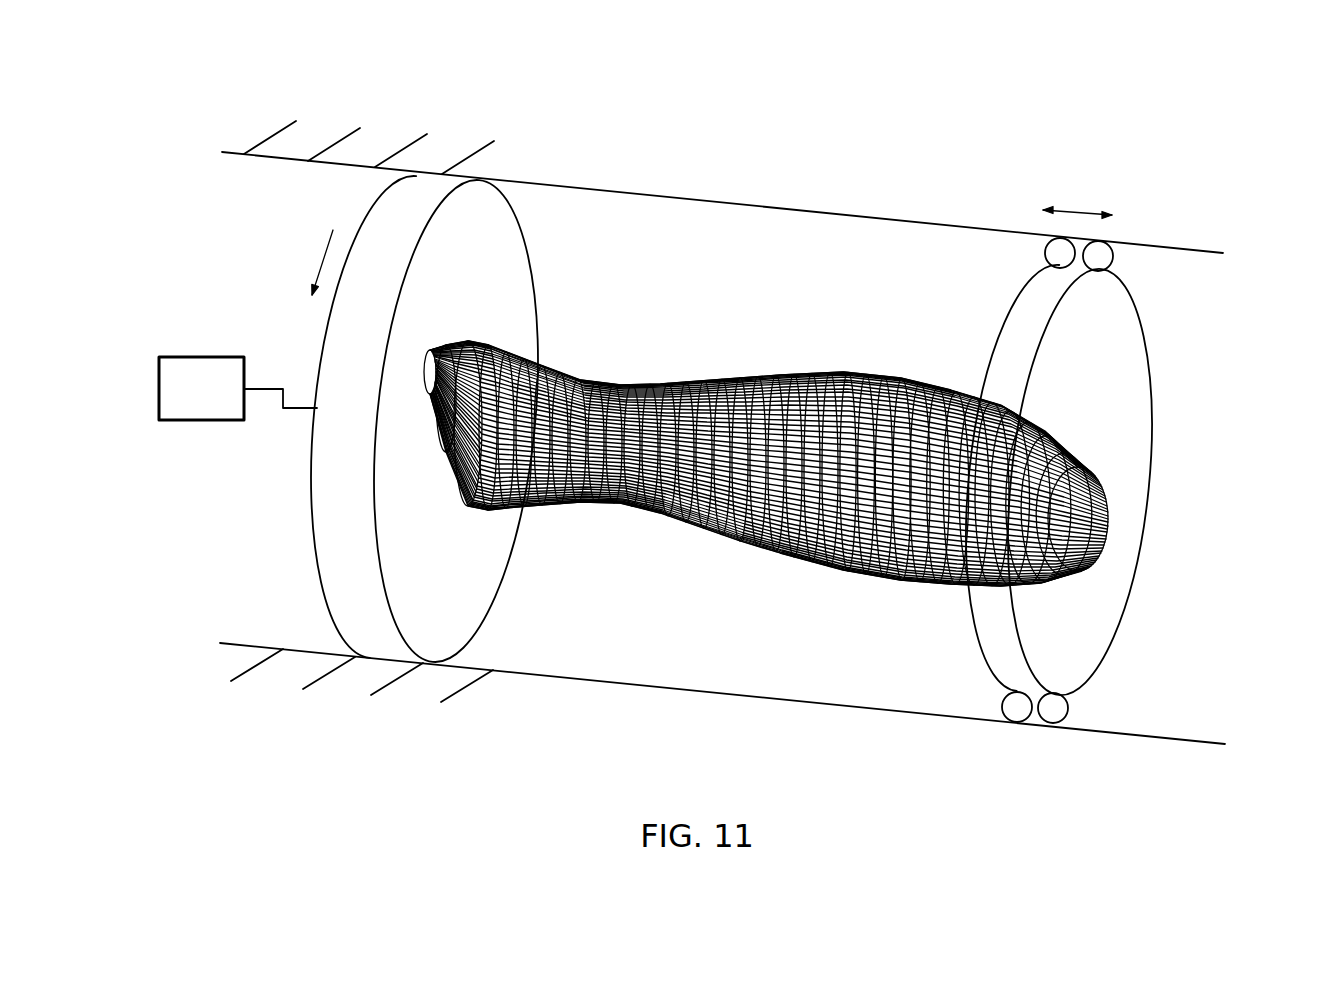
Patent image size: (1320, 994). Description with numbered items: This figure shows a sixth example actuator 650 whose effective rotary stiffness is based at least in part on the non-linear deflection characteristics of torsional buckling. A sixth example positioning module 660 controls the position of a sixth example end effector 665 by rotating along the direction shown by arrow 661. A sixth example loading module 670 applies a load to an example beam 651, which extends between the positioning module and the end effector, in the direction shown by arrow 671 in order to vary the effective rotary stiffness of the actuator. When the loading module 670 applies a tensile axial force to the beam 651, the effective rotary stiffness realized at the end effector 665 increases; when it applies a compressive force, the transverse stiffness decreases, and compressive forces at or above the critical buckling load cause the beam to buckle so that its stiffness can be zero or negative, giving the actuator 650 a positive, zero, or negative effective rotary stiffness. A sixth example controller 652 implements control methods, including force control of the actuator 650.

The sixth example actuator 650 is at (722, 405).
The example beam 651 is at (743, 393).
The sixth example controller 652 is at (178, 402).
The sixth example positioning module 660 is at (326, 541).
The arrow (rotation direction of positioning module) 661 is at (322, 256).
The sixth example end effector 665 is at (1148, 468).
The sixth example loading module 670 is at (1209, 661).
The arrow (load direction) 671 is at (1077, 211).